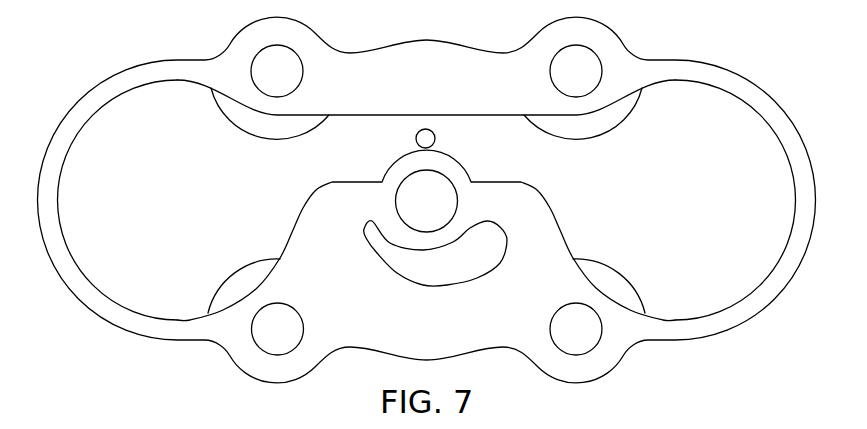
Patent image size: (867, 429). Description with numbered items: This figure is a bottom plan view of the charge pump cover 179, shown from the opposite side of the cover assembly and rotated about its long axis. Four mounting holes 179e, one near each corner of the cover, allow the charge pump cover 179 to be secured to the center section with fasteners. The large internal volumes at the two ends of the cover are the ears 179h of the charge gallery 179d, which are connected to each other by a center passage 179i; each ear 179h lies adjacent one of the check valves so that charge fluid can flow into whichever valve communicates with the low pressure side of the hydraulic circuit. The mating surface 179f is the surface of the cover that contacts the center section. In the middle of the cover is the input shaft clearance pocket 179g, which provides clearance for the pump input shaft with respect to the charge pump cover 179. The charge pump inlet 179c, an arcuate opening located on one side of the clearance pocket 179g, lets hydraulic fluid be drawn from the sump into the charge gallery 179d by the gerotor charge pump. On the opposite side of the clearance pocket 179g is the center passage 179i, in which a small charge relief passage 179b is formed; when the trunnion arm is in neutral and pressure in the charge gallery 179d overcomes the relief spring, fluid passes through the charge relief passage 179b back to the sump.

The charge pump cover 179 is at (428, 40).
The charge relief passage 179b is at (417, 134).
The charge pump inlet 179c is at (471, 281).
The charge gallery 179d is at (383, 127).
The mounting holes 179e is at (296, 53).
The mating surface 179f is at (448, 94).
The input shaft clearance pocket 179g is at (403, 222).
The ears 179h is at (200, 207).
The center passage 179i is at (369, 157).